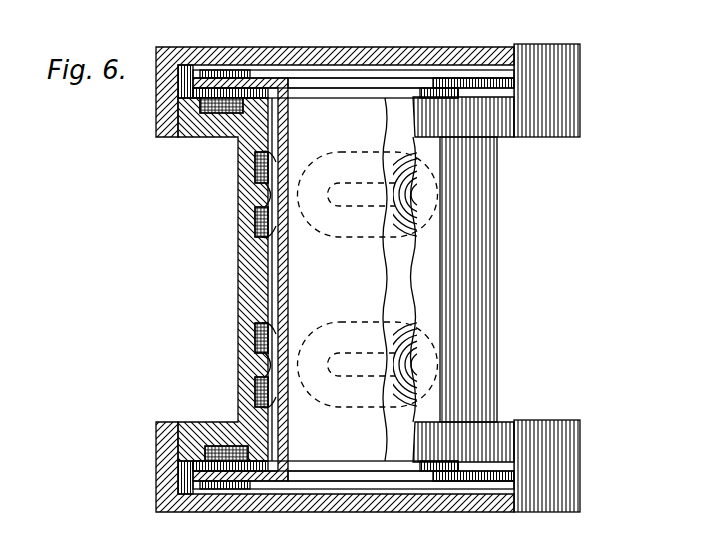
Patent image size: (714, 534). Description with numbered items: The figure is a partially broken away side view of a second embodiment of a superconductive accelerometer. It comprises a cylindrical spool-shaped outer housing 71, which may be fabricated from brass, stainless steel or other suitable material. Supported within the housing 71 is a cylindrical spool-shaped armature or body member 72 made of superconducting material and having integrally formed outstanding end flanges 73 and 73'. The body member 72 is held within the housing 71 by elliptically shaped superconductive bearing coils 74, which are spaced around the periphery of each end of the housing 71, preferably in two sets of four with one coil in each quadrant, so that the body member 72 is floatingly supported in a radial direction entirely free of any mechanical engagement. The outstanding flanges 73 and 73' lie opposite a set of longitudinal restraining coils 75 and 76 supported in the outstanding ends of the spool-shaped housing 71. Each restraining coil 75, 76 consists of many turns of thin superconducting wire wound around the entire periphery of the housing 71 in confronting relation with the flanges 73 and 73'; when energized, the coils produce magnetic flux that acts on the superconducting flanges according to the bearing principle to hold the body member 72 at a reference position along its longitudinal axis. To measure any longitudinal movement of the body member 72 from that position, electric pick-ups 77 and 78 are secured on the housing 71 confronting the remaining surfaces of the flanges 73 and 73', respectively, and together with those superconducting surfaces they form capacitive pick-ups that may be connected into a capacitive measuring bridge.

The outer housing 71 is at (250, 256).
The armature or body member 72 is at (288, 110).
The outstanding end flange 73 is at (189, 60).
The outstanding end flange 73' is at (152, 477).
The superconductive bearing coil 74 is at (301, 170).
The longitudinal restraining coil 75 is at (203, 114).
The longitudinal restraining coil 76 is at (216, 445).
The electric pick-up 77 is at (232, 70).
The electric pick-up 78 is at (234, 492).